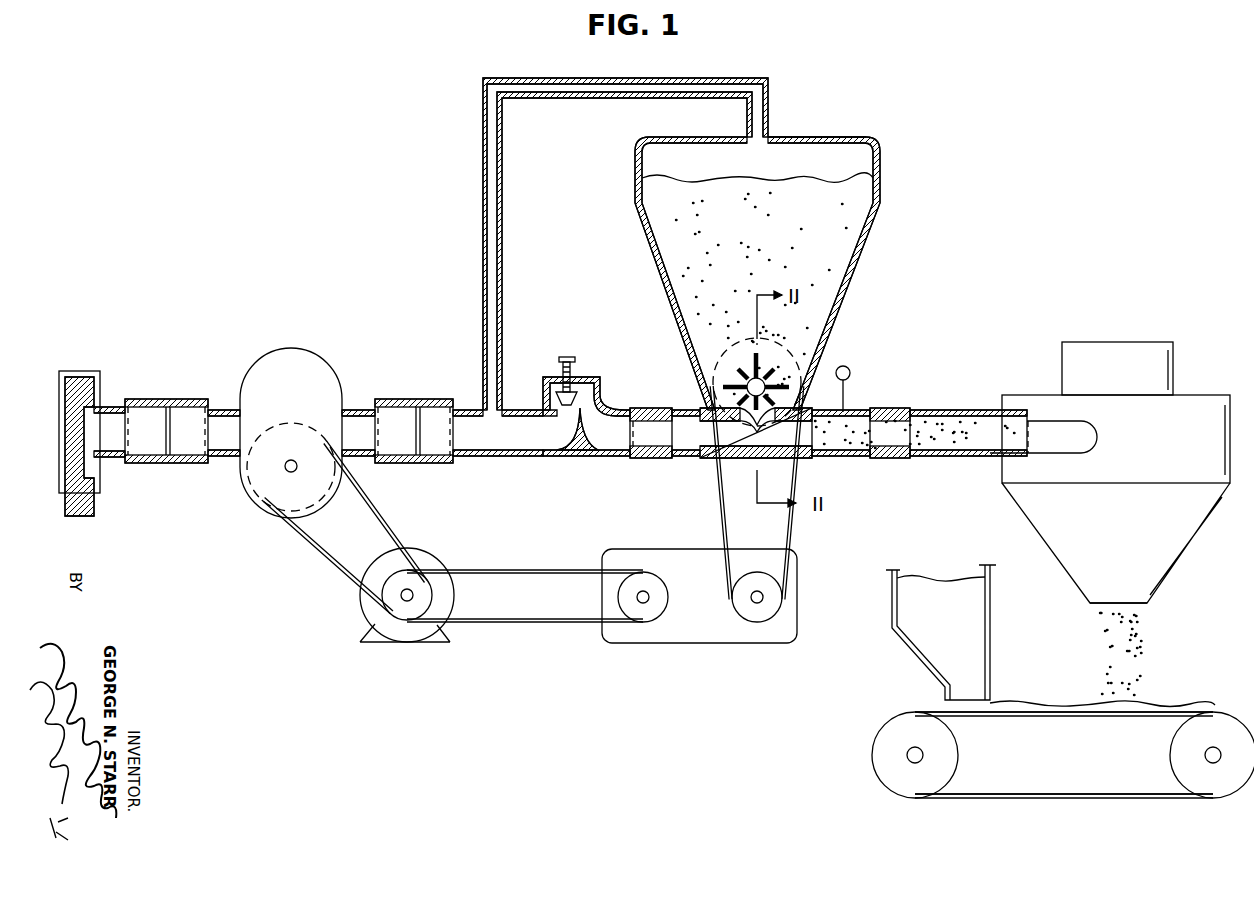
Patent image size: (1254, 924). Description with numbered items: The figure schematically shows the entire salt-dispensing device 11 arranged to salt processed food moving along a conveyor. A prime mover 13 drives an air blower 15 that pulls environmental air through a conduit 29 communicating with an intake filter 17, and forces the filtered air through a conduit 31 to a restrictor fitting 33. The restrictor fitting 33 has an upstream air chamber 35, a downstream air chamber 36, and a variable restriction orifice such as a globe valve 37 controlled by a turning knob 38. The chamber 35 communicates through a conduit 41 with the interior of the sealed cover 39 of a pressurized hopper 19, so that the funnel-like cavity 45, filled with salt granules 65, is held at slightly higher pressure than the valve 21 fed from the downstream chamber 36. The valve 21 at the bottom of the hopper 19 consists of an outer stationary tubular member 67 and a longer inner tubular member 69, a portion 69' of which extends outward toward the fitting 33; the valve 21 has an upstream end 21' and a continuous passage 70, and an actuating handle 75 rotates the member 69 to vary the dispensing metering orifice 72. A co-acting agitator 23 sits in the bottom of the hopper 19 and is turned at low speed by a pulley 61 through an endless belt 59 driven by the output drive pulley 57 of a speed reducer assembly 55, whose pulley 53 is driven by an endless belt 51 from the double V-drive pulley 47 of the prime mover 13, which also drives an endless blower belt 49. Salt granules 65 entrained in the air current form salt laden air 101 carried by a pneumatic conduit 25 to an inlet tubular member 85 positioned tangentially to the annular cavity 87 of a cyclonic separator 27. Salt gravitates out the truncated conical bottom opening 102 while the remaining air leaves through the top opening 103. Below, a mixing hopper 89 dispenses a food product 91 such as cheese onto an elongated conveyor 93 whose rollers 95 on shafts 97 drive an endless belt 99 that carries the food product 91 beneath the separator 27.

The device 11 is at (178, 112).
The prime mover 13 is at (400, 630).
The air blower 15 is at (310, 375).
The intake filter 17 is at (83, 385).
The pressurized hopper 19 is at (912, 100).
The valve 21 is at (686, 459).
The upstream end 21' is at (642, 412).
The agitator 23 is at (763, 387).
The pneumatic conduit 25 is at (932, 428).
The cyclonic separator 27 is at (1212, 290).
The conduit 29 is at (160, 418).
The conduit 31 is at (403, 408).
The restrictor fitting 33 is at (568, 455).
The upstream air chamber 35 is at (510, 430).
The downstream air chamber 36 is at (612, 453).
The globe valve 37 is at (540, 372).
The knob 38 is at (568, 356).
The sealed cover 39 is at (820, 138).
The conduit 41 is at (490, 148).
The cavity 45 is at (820, 167).
The double V-drive pulley 47 is at (395, 607).
The blower belt 49 is at (325, 558).
The endless belt 51 is at (548, 622).
The pulley 53 is at (650, 618).
The speed reducer assembly 55 is at (712, 630).
The output drive pulley 57 is at (765, 620).
The endless belt 59 is at (790, 530).
The pulley 61 is at (840, 320).
The salt granules 65 is at (810, 250).
The elongated tubular member 67 is at (708, 412).
The second elongated tubular member 69 is at (750, 488).
The portion 69' is at (655, 482).
The continuous passage 70 is at (805, 435).
The dispensing metering orifice 72 is at (762, 428).
The actuating handle 75 is at (850, 372).
The inlet tubular member 85 is at (1058, 440).
The annular cavity 87 is at (1178, 420).
The mixing hopper 89 is at (990, 590).
The food product 91 is at (1013, 705).
The conveyor 93 is at (1064, 755).
The rollers 95 is at (897, 775).
The shafts 97 is at (920, 762).
The endless belt 99 is at (990, 716).
The salt laden air 101 is at (866, 410).
The truncated conical bottom opening 102 is at (1095, 605).
The opening 103 is at (1110, 342).